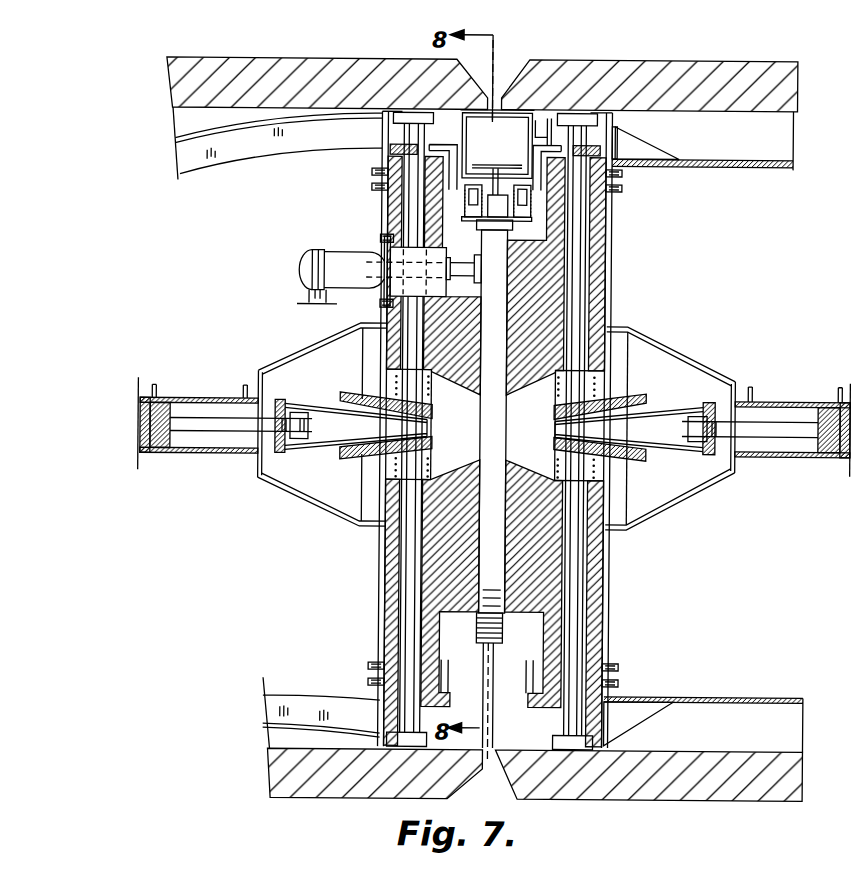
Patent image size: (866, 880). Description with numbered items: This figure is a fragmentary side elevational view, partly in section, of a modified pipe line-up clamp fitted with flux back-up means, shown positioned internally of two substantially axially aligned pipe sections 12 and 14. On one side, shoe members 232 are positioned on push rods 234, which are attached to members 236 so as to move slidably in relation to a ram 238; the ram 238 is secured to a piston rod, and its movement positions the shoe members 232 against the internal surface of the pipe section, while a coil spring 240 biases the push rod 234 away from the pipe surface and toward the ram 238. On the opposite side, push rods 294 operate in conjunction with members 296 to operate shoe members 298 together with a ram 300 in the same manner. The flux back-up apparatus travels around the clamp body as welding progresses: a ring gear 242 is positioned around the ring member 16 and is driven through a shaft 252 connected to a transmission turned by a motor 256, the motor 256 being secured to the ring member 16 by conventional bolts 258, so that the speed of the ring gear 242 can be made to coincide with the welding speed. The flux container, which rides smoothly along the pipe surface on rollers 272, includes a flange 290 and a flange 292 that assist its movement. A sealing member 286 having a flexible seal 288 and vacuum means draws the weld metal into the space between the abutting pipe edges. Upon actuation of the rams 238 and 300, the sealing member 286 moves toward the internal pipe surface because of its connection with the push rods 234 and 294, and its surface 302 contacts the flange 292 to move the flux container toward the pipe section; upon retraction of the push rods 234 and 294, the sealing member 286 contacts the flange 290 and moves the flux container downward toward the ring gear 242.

The pipe section 12 is at (712, 60).
The pipe section 14 is at (262, 58).
The ring member 16 is at (542, 613).
The shoe members 232 is at (407, 112).
The push rods 234 is at (404, 134).
The members 236 is at (357, 397).
The ram 238 is at (317, 400).
The coil spring 240 is at (433, 387).
The ring gear 242 is at (481, 645).
The shaft 252 is at (475, 280).
The motor 256 is at (333, 252).
The bolts 258 is at (380, 237).
The rollers 272 is at (458, 110).
The sealing member 286 is at (553, 710).
The flexible seal 288 is at (607, 743).
The flange 290 is at (497, 167).
The flange 292 is at (538, 125).
The push rods 294 is at (616, 127).
The members 296 is at (623, 397).
The shoe members 298 is at (580, 116).
The ram 300 is at (662, 408).
The surface 302 is at (548, 143).